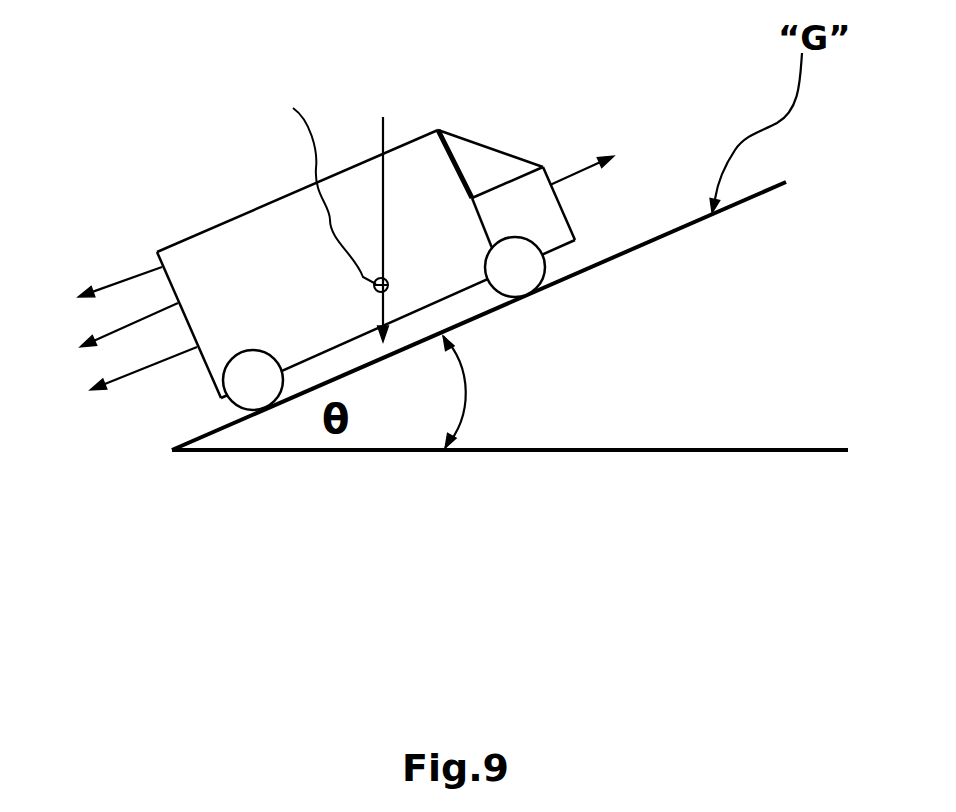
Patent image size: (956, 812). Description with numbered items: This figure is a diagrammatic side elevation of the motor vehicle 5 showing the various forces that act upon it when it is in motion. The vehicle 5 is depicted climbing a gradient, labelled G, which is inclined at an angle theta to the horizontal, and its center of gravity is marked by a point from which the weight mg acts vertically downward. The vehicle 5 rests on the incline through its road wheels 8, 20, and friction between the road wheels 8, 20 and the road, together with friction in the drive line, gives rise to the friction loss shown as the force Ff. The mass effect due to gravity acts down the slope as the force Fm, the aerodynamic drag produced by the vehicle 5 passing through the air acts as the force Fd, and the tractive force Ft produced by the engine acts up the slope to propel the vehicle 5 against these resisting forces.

The vehicle 5 is at (212, 211).
The road wheel 20 is at (239, 411).
The road wheel 8 is at (505, 297).